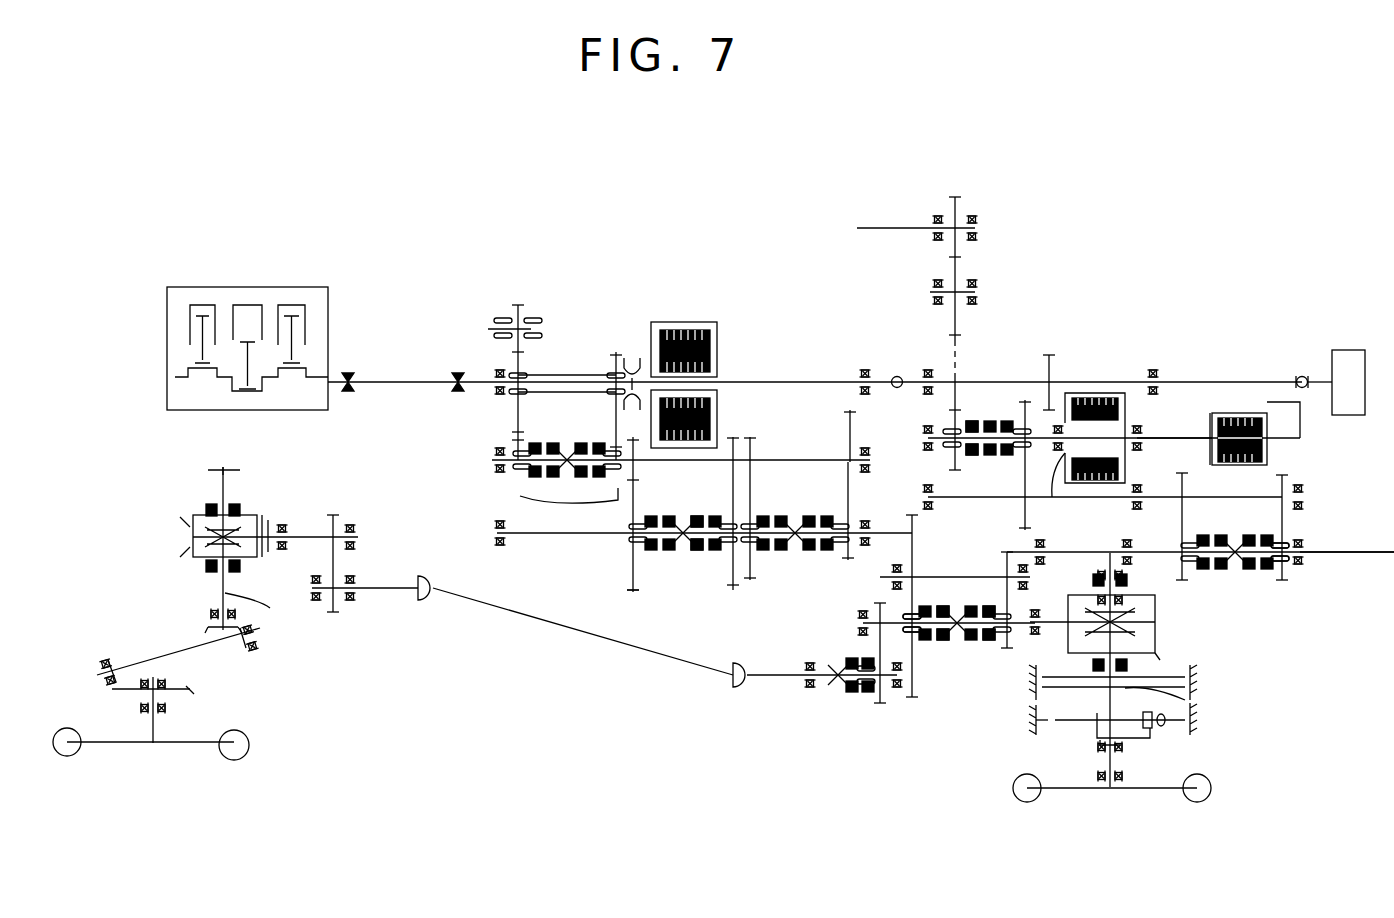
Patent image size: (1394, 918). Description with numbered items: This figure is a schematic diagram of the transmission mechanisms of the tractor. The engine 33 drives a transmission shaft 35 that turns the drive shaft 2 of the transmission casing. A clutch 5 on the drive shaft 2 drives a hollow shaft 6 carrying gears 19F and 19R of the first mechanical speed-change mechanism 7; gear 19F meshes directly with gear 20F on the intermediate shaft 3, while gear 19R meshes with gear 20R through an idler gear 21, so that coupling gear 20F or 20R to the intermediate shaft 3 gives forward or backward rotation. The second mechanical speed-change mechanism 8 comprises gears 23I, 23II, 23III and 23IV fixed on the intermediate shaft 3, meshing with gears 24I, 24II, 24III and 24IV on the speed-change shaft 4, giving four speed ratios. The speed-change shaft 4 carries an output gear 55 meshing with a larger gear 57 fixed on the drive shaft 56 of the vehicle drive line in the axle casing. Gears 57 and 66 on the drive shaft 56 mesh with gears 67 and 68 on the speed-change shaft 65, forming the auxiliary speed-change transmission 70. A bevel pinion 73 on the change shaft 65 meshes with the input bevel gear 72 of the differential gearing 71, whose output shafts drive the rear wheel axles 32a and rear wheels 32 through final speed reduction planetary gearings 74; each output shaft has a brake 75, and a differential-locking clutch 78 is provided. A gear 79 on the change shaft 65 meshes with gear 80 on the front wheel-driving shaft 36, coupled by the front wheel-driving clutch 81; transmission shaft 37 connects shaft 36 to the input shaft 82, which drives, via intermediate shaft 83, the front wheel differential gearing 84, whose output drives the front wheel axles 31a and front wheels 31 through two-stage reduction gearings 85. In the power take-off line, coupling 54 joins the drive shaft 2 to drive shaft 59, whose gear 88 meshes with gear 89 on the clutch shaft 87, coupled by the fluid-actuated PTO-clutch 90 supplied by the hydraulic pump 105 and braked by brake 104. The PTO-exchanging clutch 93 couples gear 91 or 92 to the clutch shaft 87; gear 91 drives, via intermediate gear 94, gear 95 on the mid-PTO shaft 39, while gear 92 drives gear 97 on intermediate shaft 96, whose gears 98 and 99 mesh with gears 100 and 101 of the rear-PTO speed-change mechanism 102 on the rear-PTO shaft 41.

The drive shaft 2 is at (738, 382).
The intermediate shaft 3 is at (714, 462).
The speed-change shaft 4 is at (572, 545).
The clutch 5 is at (675, 322).
The hollow shaft 6 is at (557, 372).
The first mechanical speed-change mechanism 7 is at (505, 425).
The second mechanical speed-change mechanism 8 is at (685, 572).
The gear 19F is at (616, 352).
The gear 19R is at (522, 410).
The gear 20F is at (616, 500).
The gear 20R is at (500, 493).
The idler gear 21 is at (517, 305).
The gear 23I is at (682, 514).
The gear 23II is at (742, 437).
The gear 23III is at (752, 437).
The gear 23IV is at (850, 410).
The gear 24I is at (633, 592).
The gear 24II is at (733, 592).
The gear 24III is at (752, 580).
The gear 24IV is at (848, 518).
The front wheels 31 is at (243, 758).
The front wheel axles 31a is at (155, 725).
The rear wheels 32 is at (1210, 796).
The rear wheel axles 32a is at (1112, 762).
The engine 33 is at (250, 287).
The transmission shaft 35 is at (388, 380).
The front wheel-driving shaft 36 is at (770, 678).
The transmission shaft 37 is at (543, 620).
The mid-PTO shaft 39 is at (866, 228).
The rear-PTO shaft 41 is at (1362, 556).
The coupling 54 is at (896, 375).
The output gear 55 is at (912, 515).
The drive shaft 56 is at (948, 577).
The larger gear 57 is at (880, 600).
The drive shaft 59 is at (1022, 380).
The speed-change shaft 65 is at (1010, 648).
The gear 66 is at (1200, 539).
The gear 67 is at (915, 650).
The gear 68 is at (1005, 648).
The auxiliary speed-change transmission 70 is at (945, 655).
The differential gearing 71 is at (1160, 622).
The input bevel gear 72 is at (1160, 655).
The bevel pinion 73 is at (1055, 640).
The final speed reduction planetary gearings 74 is at (1068, 732).
The brake 75 is at (1185, 715).
The differential-locking clutch 78 is at (1150, 582).
The gear 79 is at (880, 603).
The gear 80 is at (875, 695).
The front wheel-driving clutch 81 is at (850, 700).
The input shaft 82 is at (389, 590).
The intermediate shaft 83 is at (315, 535).
The front wheel differential gearing 84 is at (185, 540).
The two-stage reduction gearings 85 is at (160, 660).
The clutch shaft 87 is at (1178, 438).
The gear 88 is at (1052, 355).
The gear 89 is at (1008, 552).
The fluid-actuated PTO-clutch 90 is at (1100, 393).
The gear 91 is at (960, 418).
The gear 92 is at (1020, 400).
The PTO-exchanging clutch 93 is at (975, 410).
The intermediate gear 94 is at (950, 324).
The gear 95 is at (957, 197).
The intermediate shaft 96 is at (1150, 486).
The gear 97 is at (1025, 528).
The gear 98 is at (1205, 526).
The gear 99 is at (1285, 478).
The gear 100 is at (1182, 528).
The gear 101 is at (1283, 583).
The rear-PTO speed-change mechanism 102 is at (1295, 522).
The brake 104 is at (1236, 413).
The hydraulic pump 105 is at (1349, 350).